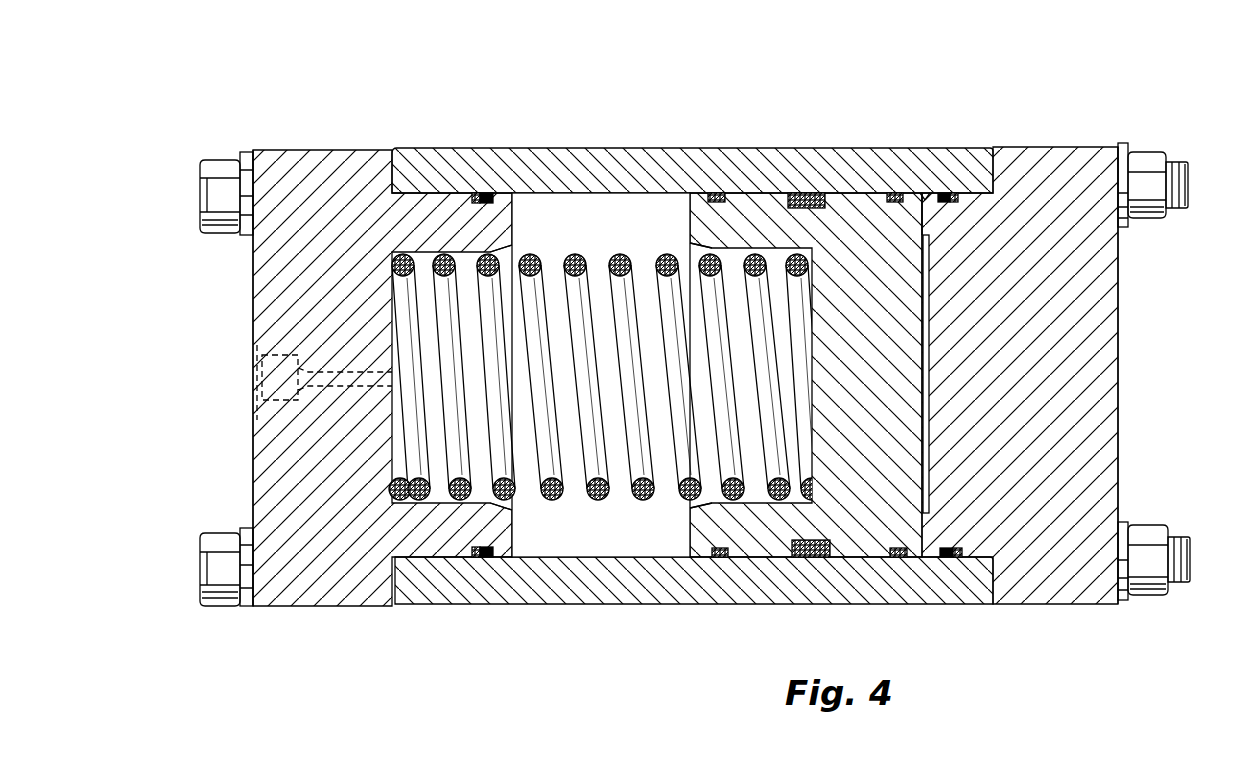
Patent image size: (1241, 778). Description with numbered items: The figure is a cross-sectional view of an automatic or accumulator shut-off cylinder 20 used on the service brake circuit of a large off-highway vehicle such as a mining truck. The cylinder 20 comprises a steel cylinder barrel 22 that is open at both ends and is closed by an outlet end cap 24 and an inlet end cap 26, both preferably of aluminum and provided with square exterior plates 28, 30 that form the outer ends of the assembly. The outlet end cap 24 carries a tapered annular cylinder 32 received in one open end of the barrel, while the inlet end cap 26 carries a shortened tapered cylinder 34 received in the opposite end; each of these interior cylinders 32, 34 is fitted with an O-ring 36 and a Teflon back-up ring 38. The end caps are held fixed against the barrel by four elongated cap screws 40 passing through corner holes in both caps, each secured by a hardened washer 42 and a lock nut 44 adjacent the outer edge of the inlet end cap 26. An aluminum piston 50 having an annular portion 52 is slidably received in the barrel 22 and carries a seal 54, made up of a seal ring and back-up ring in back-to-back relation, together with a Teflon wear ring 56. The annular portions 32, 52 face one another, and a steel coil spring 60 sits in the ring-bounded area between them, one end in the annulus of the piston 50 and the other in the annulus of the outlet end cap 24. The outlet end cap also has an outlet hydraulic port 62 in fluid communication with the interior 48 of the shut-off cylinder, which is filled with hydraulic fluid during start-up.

The shut-off cylinder 20 is at (1034, 76).
The cylinder barrel 22 is at (648, 165).
The outlet end cap 24 is at (312, 588).
The inlet end cap 26 is at (1008, 538).
The exterior plate 28 is at (253, 292).
The exterior plate 30 is at (1106, 376).
The tapered annular cylinder 32 is at (493, 210).
The shortened tapered cylinder 34 is at (920, 193).
The O-ring 36 is at (943, 198).
The back-up ring 38 is at (953, 198).
The cap screw 40 is at (220, 165).
The hardened washer 42 is at (1122, 160).
The lock nut 44 is at (1152, 153).
The interior of the shut-off cylinder 48 is at (568, 213).
The piston 50 is at (870, 545).
The annular portion 52 is at (690, 225).
The seal 54 is at (806, 198).
The wear ring 56 is at (715, 198).
The coil spring 60 is at (530, 257).
The outlet hydraulic port 62 is at (262, 378).